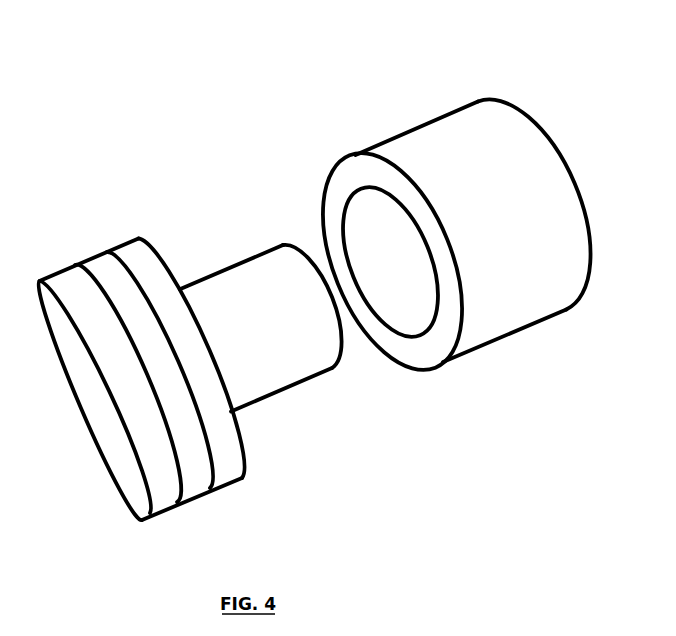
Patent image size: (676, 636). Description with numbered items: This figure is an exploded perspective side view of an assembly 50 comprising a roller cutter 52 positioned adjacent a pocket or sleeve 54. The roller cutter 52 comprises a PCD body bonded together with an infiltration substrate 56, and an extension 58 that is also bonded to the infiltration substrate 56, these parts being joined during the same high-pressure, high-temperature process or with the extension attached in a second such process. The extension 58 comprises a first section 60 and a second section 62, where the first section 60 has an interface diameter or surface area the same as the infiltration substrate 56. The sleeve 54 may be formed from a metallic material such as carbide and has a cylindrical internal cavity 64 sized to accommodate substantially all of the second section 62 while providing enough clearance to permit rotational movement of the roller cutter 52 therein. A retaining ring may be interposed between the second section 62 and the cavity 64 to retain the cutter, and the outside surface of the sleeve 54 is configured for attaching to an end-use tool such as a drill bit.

The assembly 50 is at (325, 66).
The roller cutter 52 is at (160, 241).
The pocket or sleeve 54 is at (441, 107).
The infiltration substrate 56 is at (95, 268).
The extension 58 is at (226, 262).
The first section 60 is at (233, 467).
The second section 62 is at (300, 365).
The internal cavity 64 is at (416, 324).